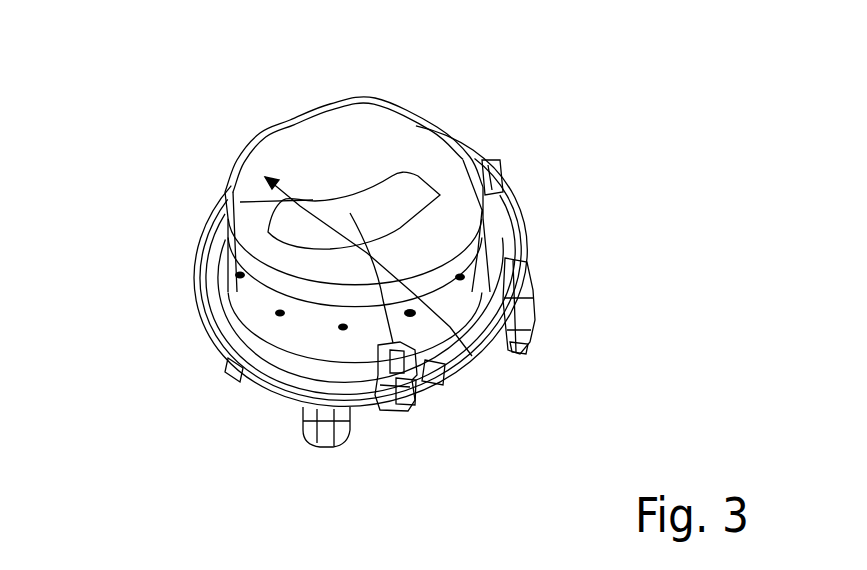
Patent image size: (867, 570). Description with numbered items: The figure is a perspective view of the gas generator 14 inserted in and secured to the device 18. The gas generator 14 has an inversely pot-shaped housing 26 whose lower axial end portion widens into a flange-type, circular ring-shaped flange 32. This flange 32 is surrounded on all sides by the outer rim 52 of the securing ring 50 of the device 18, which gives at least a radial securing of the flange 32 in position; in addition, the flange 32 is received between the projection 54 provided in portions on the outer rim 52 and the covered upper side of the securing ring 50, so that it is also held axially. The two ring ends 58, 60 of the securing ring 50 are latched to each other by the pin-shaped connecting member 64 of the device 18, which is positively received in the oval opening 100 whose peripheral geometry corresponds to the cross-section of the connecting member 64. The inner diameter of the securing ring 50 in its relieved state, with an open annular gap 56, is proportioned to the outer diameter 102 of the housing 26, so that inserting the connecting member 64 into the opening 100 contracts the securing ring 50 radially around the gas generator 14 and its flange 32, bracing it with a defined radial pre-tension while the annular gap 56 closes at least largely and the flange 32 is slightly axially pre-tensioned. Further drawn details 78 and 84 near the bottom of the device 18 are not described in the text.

The gas generator 14 is at (362, 130).
The device 18 is at (498, 366).
The housing 26 is at (410, 140).
The flange 32 is at (235, 258).
The securing ring 50 is at (253, 393).
The outer rim 52 is at (490, 170).
The projection 54 is at (203, 310).
The annular gap 56 is at (407, 411).
The ring end 58 is at (470, 371).
The ring end 60 is at (376, 412).
The connecting member 64 is at (240, 202).
The clip foot 78 is at (520, 350).
The nut 84 is at (328, 447).
The opening 100 is at (387, 413).
The outer diameter 102 is at (268, 232).